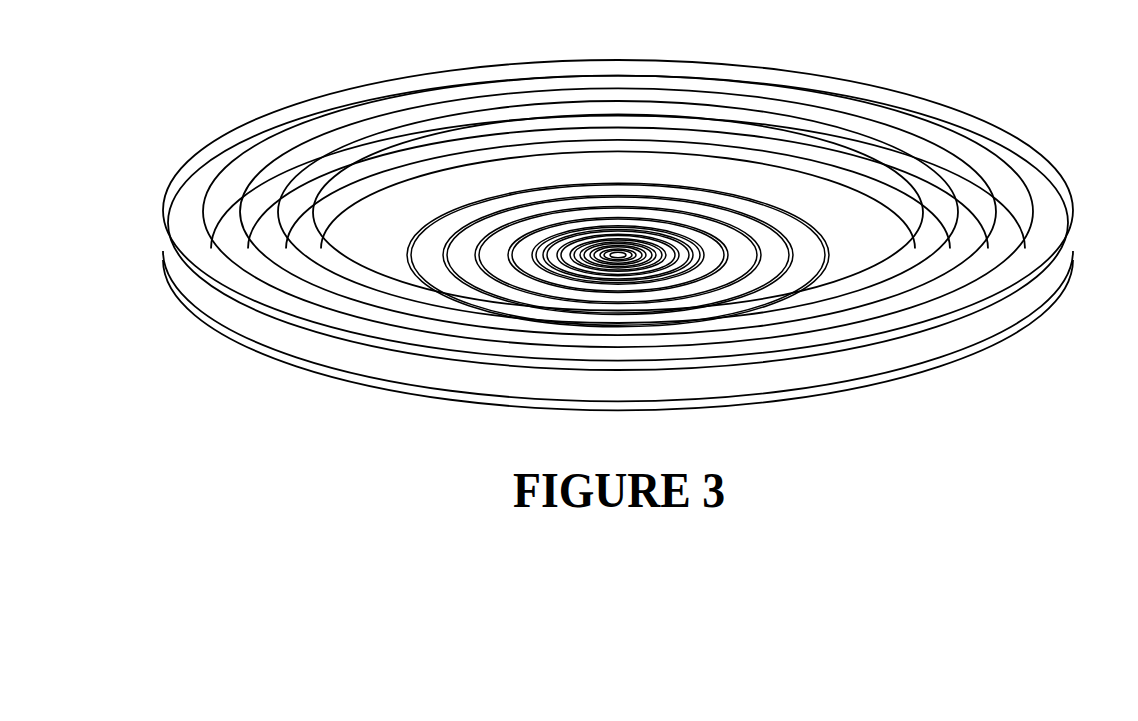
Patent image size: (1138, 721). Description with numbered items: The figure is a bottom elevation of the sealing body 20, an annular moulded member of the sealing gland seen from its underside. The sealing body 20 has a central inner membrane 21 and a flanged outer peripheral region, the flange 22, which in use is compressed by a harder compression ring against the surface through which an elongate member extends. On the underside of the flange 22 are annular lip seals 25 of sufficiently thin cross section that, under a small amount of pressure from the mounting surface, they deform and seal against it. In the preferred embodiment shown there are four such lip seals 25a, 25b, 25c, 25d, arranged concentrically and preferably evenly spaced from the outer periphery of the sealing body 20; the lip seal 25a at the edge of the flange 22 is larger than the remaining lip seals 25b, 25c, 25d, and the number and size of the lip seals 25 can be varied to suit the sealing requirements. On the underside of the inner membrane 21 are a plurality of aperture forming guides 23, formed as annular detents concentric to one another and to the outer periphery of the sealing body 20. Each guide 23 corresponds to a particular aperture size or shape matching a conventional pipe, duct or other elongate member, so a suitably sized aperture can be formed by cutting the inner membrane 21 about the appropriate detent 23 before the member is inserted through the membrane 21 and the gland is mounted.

The sealing body 20 is at (894, 59).
The inner membrane 21 is at (850, 282).
The flange 22 is at (1022, 307).
The aperture forming guides 23 is at (587, 250).
The annular lip seal 25 is at (990, 162).
The lip seal at the edge of the flange 25a is at (170, 210).
The lip seal 25b is at (227, 180).
The lip seal 25c is at (303, 150).
The lip seal 25d is at (388, 137).